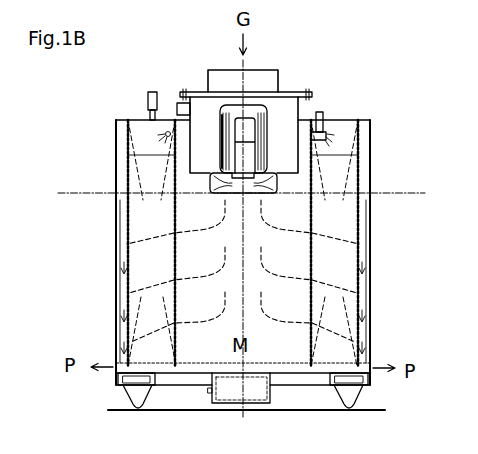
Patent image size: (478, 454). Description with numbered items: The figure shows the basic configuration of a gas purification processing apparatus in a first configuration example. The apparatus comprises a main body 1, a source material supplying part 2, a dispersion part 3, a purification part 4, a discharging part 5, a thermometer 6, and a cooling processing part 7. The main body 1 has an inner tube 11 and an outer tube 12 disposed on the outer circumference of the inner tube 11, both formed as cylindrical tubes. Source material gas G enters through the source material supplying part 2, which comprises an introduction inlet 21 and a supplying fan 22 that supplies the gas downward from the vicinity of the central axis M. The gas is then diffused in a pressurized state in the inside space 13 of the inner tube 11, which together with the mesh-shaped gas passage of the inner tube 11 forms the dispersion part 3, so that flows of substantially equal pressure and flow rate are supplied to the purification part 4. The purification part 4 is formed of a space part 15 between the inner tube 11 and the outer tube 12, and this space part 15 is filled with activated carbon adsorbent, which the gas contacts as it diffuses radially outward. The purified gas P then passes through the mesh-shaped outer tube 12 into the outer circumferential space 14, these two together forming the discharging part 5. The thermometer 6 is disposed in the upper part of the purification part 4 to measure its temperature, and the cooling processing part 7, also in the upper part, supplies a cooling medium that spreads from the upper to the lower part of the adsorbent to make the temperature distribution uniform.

The main body 1 is at (408, 110).
The source material supplying part 2 is at (282, 122).
The introduction inlet 21 is at (262, 69).
The supplying fan 22 is at (263, 106).
The dispersion part 3 is at (345, 202).
The purification part 4 is at (348, 235).
The discharging part 5 is at (360, 337).
The thermometer 6 is at (149, 92).
The cooling processing part 7 is at (321, 121).
The inner tube 11 is at (143, 208).
The outer tube 12 is at (128, 180).
The inside space 13 is at (205, 210).
The outer circumferential space 14 is at (120, 222).
The space part 15 is at (142, 255).